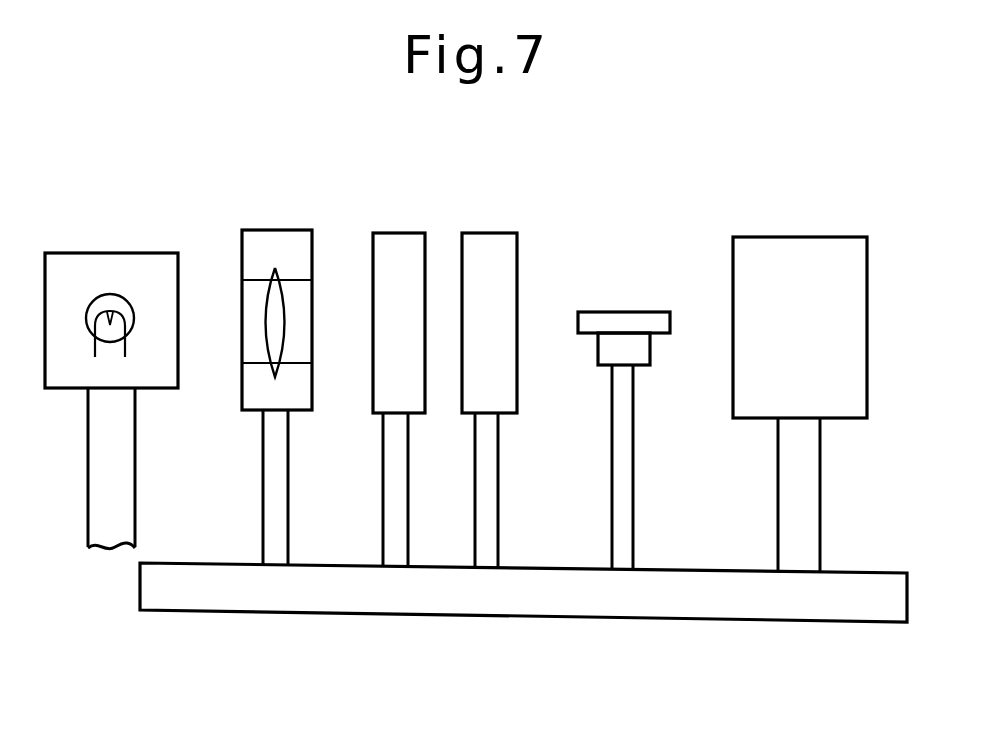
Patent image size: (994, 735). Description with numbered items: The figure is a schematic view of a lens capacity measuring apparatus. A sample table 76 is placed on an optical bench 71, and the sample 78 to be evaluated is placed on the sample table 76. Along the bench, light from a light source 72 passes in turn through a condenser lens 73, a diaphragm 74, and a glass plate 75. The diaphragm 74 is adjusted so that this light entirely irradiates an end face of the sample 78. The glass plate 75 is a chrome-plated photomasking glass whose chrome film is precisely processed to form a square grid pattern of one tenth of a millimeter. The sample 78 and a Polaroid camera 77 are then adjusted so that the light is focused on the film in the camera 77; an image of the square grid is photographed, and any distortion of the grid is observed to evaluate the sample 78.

The optical bench 71 is at (735, 611).
The light source 72 is at (155, 263).
The condenser lens 73 is at (293, 238).
The diaphragm 74 is at (407, 240).
The glass plate 75 is at (498, 240).
The sample table 76 is at (603, 354).
The Polaroid camera 77 is at (840, 247).
The sample 78 is at (652, 317).